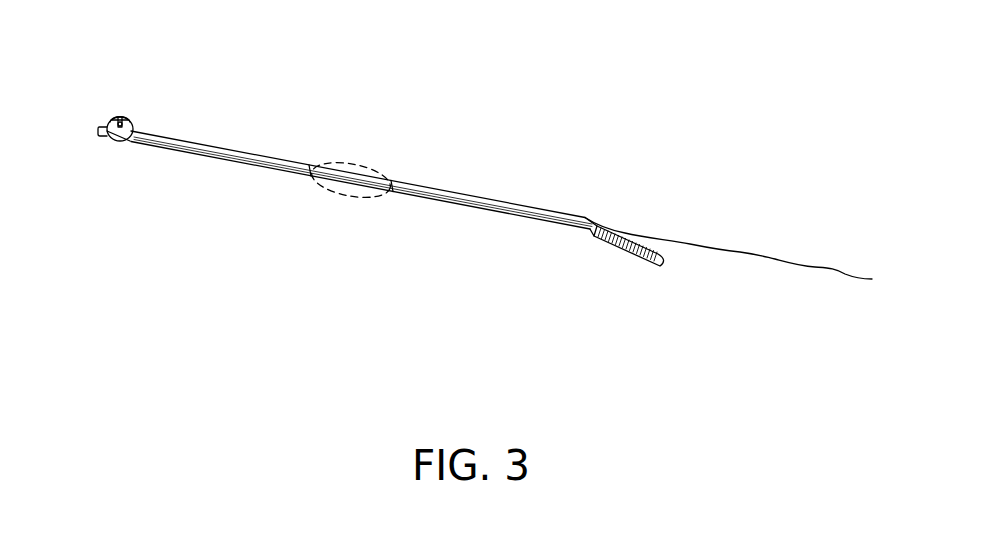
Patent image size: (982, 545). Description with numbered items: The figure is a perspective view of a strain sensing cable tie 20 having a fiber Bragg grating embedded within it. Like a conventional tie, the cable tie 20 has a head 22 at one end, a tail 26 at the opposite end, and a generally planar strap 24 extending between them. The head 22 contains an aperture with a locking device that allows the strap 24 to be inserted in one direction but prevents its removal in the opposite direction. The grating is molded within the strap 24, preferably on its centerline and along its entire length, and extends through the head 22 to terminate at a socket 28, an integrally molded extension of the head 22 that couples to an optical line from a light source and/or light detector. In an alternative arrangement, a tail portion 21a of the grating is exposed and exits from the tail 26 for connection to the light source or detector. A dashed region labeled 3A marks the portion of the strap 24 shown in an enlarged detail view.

The cable tie 20 is at (343, 101).
The head 22 is at (118, 116).
The strap 24 is at (463, 196).
The tail 26 is at (656, 270).
The socket 28 is at (105, 136).
The tail portion of the FBG 21a is at (723, 249).
The detail region shown in FIG. 3A is at (347, 191).